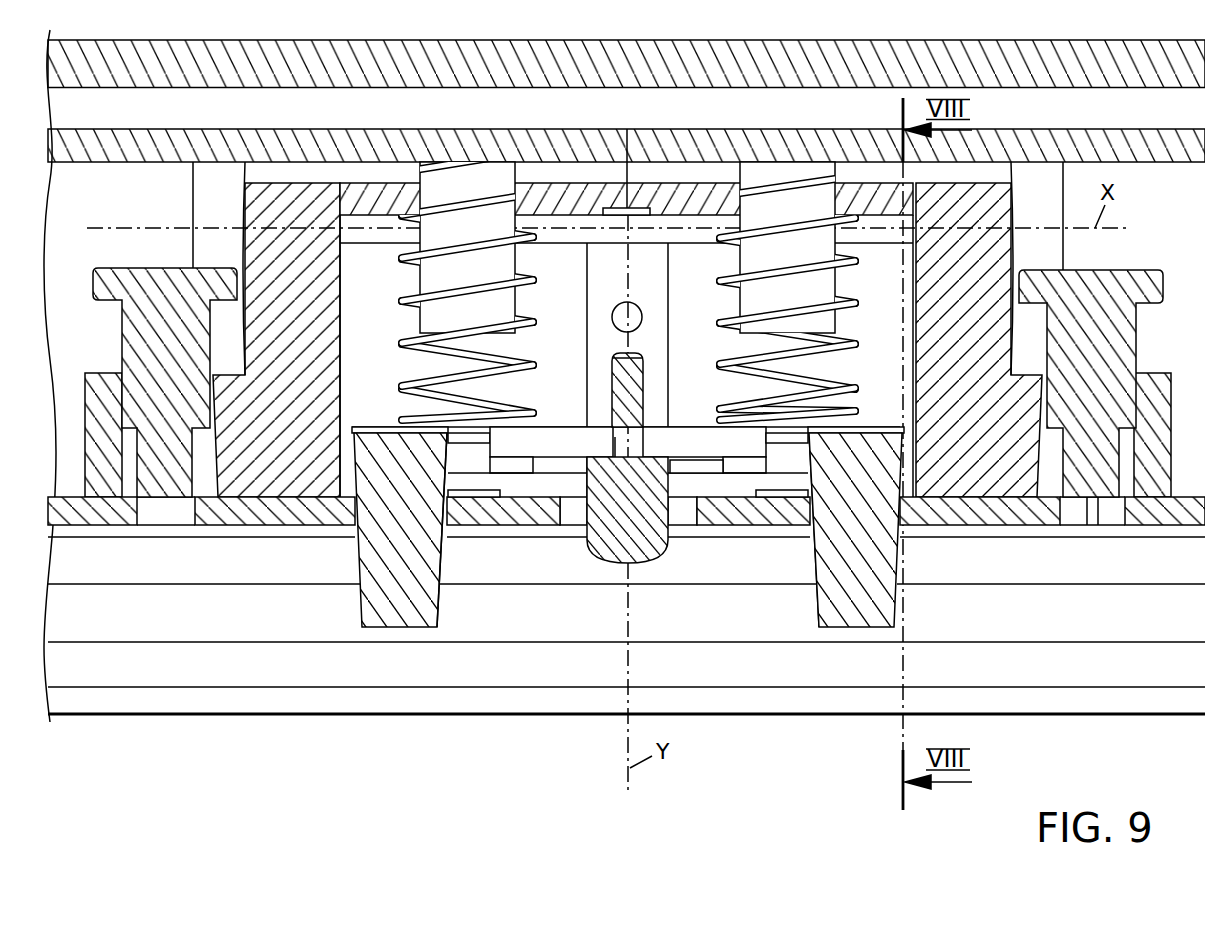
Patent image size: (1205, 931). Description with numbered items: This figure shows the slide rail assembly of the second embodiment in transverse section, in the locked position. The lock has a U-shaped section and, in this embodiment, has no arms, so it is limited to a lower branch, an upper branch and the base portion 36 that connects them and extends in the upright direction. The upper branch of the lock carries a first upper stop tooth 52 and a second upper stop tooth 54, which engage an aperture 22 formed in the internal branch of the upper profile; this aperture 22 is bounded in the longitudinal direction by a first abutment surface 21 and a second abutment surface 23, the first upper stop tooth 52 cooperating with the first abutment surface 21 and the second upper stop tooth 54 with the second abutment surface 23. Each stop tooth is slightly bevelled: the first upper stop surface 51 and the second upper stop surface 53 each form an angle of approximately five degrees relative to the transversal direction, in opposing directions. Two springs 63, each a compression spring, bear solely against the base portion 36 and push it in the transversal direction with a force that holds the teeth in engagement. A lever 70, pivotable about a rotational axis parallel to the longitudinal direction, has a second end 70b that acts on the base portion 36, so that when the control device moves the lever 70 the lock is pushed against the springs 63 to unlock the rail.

The first abutment surface 21 is at (448, 500).
The aperture 22 is at (353, 513).
The second abutment surface 23 is at (808, 505).
The base portion 36 is at (693, 428).
The first upper stop surface 51 is at (447, 500).
The first upper stop tooth 52 is at (393, 615).
The second upper stop surface 53 is at (812, 507).
The second upper stop tooth 54 is at (864, 617).
The springs 63 is at (408, 347).
The lever 70 is at (672, 548).
The second end 70b is at (690, 463).